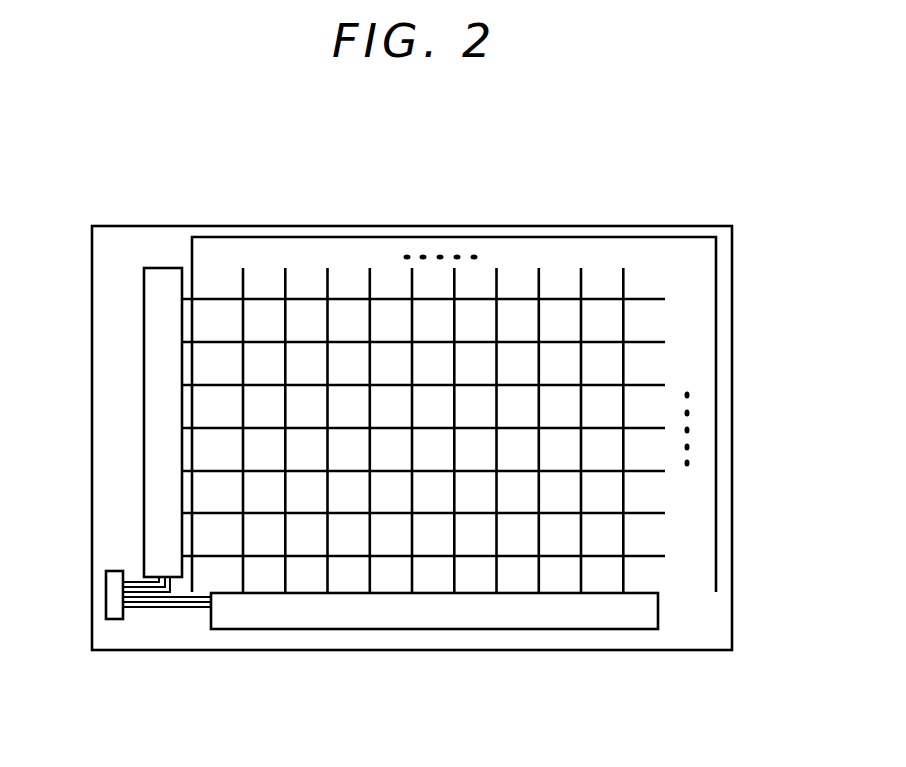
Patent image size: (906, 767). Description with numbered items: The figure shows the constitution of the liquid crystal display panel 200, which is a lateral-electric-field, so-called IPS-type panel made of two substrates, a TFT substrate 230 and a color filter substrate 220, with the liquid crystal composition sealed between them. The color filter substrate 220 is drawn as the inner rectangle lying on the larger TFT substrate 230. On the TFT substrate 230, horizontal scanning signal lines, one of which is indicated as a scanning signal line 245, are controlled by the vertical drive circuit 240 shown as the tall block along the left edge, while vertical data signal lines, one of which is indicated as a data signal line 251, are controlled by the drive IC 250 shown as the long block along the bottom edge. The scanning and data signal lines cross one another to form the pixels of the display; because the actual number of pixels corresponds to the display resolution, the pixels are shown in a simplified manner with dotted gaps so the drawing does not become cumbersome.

The liquid crystal display panel 200 is at (442, 168).
The color filter substrate 220 is at (333, 236).
The TFT substrate 230 is at (133, 292).
The vertical drive circuit 240 is at (167, 428).
The X electrode 245 is at (653, 514).
The drive IC 250 is at (415, 613).
The Y electrode 251 is at (623, 487).